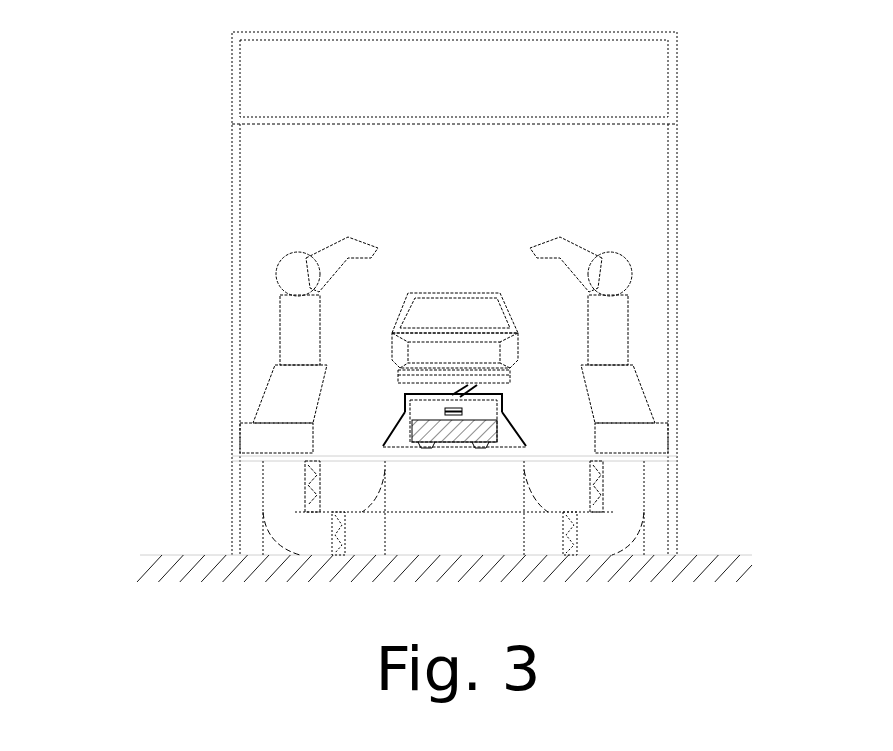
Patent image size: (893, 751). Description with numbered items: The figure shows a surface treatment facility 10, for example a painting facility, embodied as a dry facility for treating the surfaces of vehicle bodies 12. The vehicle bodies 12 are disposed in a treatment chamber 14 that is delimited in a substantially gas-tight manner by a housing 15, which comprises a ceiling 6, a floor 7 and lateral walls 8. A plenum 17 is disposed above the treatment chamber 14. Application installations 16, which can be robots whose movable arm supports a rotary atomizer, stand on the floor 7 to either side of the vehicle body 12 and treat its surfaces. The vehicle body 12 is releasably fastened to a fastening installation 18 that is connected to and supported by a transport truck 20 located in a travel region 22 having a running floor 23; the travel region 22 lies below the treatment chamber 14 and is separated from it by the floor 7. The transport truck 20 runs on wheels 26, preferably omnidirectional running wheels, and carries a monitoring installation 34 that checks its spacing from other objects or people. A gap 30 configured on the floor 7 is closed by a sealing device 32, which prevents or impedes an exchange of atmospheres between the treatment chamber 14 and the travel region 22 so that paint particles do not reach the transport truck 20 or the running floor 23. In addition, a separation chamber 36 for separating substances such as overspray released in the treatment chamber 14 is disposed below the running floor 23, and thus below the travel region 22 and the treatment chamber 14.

The surface treatment facility 10 is at (167, 72).
The plenum 17 is at (642, 73).
The lateral walls 8 is at (241, 156).
The ceiling 6 is at (523, 125).
The treatment chamber 14 is at (441, 195).
The housing 15 is at (232, 262).
The application installations 16 is at (318, 252).
The vehicle bodies 12 is at (452, 292).
The fastening installations 18 is at (478, 388).
The gap 30 is at (466, 402).
The sealing device 32 is at (452, 393).
The monitoring installation 34 is at (445, 411).
The running floor 23 is at (413, 444).
The travel region 22 is at (507, 436).
The floor 7 is at (323, 453).
The wheels 26 is at (420, 450).
The transport trucks 20 is at (455, 450).
The separation chamber 36 is at (648, 502).